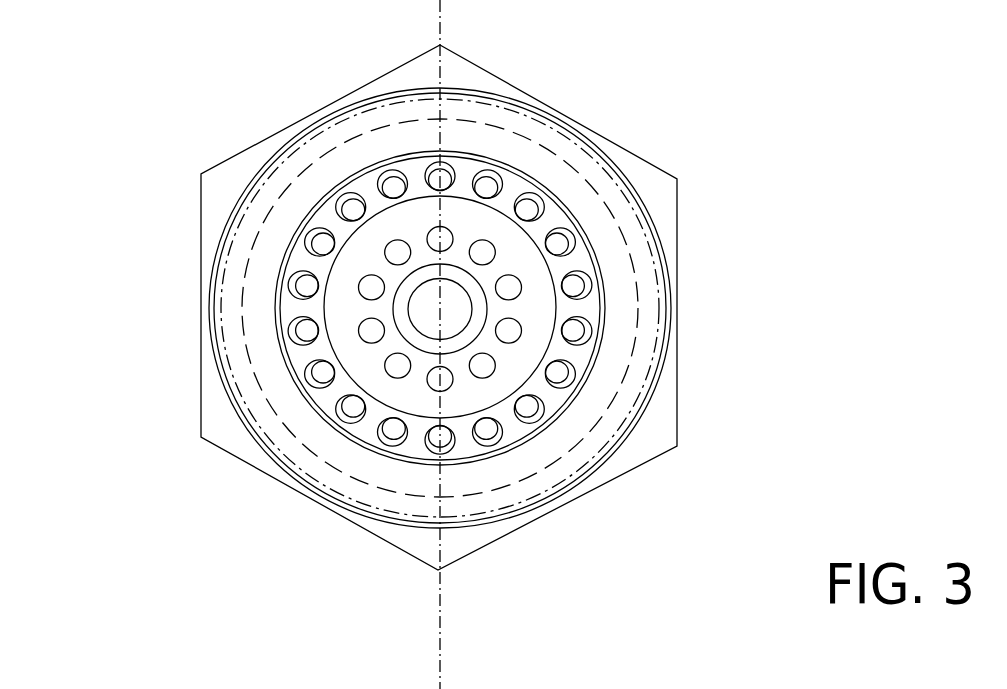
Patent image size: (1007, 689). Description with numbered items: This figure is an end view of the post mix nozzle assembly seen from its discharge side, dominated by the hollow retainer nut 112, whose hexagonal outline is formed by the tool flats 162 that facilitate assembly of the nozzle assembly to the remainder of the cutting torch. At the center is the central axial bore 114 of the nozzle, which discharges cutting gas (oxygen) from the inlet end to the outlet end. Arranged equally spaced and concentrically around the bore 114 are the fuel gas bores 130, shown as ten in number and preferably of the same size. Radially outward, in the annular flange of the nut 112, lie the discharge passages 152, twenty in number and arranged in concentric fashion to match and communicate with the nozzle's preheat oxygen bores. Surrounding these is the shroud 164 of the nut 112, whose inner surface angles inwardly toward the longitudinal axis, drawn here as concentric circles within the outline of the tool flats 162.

The hollow retainer nut 112 is at (676, 422).
The central axial bore 114 is at (467, 297).
The fuel gas bores 130 is at (512, 330).
The discharge passages 152 is at (548, 180).
The tool flats 162 is at (488, 74).
The shroud 164 is at (655, 347).